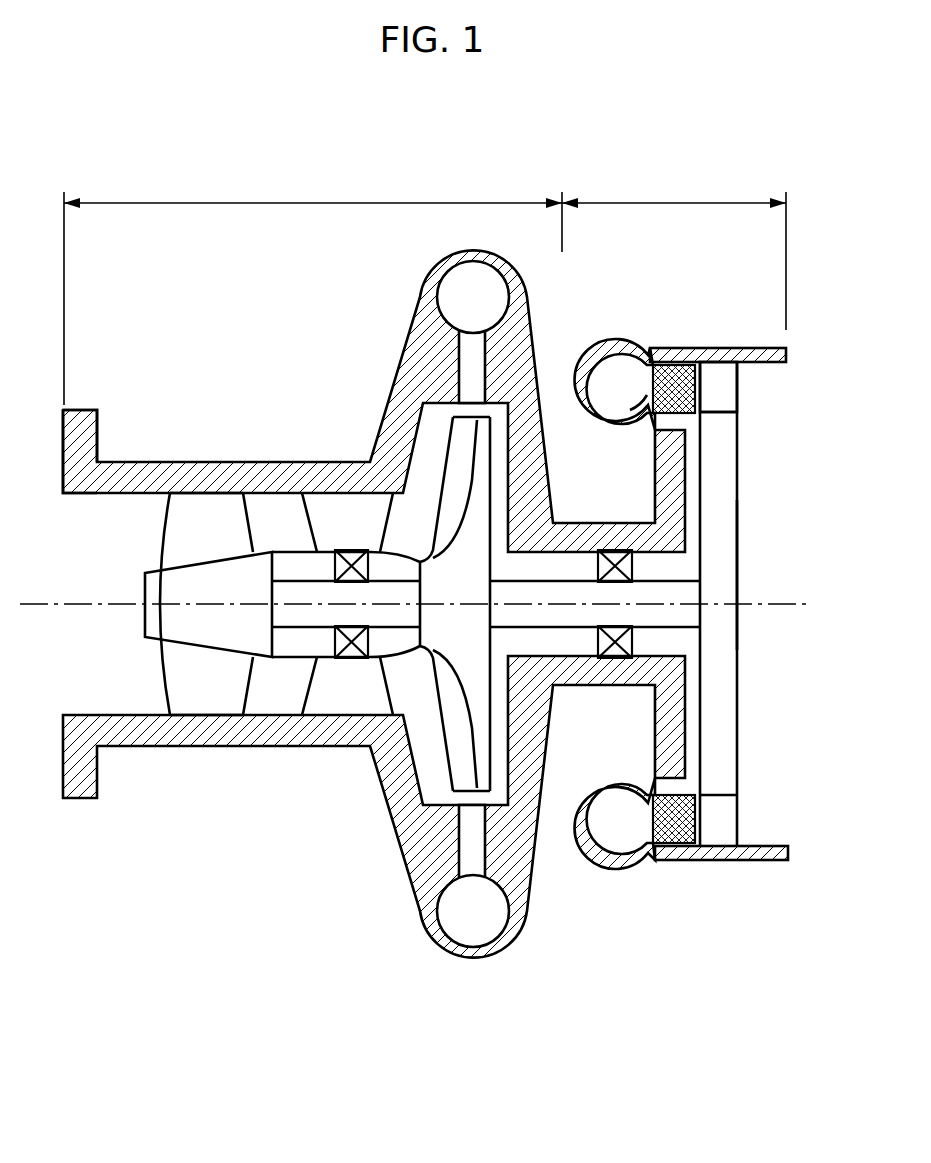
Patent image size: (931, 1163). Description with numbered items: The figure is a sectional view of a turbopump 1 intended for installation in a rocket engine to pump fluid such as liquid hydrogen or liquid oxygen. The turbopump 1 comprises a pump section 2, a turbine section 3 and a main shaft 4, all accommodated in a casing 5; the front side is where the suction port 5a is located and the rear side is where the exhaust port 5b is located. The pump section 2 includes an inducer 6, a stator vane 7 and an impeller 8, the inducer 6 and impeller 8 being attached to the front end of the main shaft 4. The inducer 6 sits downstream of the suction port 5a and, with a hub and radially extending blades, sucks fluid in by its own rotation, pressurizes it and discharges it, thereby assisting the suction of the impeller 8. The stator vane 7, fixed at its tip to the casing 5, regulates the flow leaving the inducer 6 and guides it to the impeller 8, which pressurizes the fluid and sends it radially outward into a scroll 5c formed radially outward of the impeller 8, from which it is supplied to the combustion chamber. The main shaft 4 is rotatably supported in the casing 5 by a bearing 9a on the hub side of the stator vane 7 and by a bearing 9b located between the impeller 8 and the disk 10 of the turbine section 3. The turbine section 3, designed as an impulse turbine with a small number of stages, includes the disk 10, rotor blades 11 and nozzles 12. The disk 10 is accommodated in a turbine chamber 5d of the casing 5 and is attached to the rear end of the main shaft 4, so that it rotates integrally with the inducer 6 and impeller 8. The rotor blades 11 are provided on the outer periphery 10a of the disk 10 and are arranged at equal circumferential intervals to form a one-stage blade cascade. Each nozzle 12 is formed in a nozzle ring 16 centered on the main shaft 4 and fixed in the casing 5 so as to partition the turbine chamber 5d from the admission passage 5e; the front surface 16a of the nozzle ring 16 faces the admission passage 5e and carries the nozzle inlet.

The turbopump 1 is at (619, 154).
The pump section 2 is at (313, 286).
The turbine section 3 is at (674, 249).
The main shaft 4 is at (292, 592).
The casing 5 is at (400, 342).
The suction port 5a is at (80, 495).
The exhaust port 5b is at (785, 845).
The scroll 5c is at (478, 292).
The turbine chamber 5d is at (751, 574).
The admission passage 5e is at (622, 370).
The inducer 6 is at (207, 517).
The stator vane 7 is at (323, 517).
The impeller 8 is at (435, 483).
The bearing 9a is at (347, 660).
The bearing 9b is at (617, 658).
The disk 10 is at (720, 735).
The outer periphery 10a is at (720, 406).
The rotor blade 11 is at (722, 392).
The nozzle 12 is at (667, 352).
The nozzle ring 16 is at (655, 397).
The front surface 16a is at (643, 408).